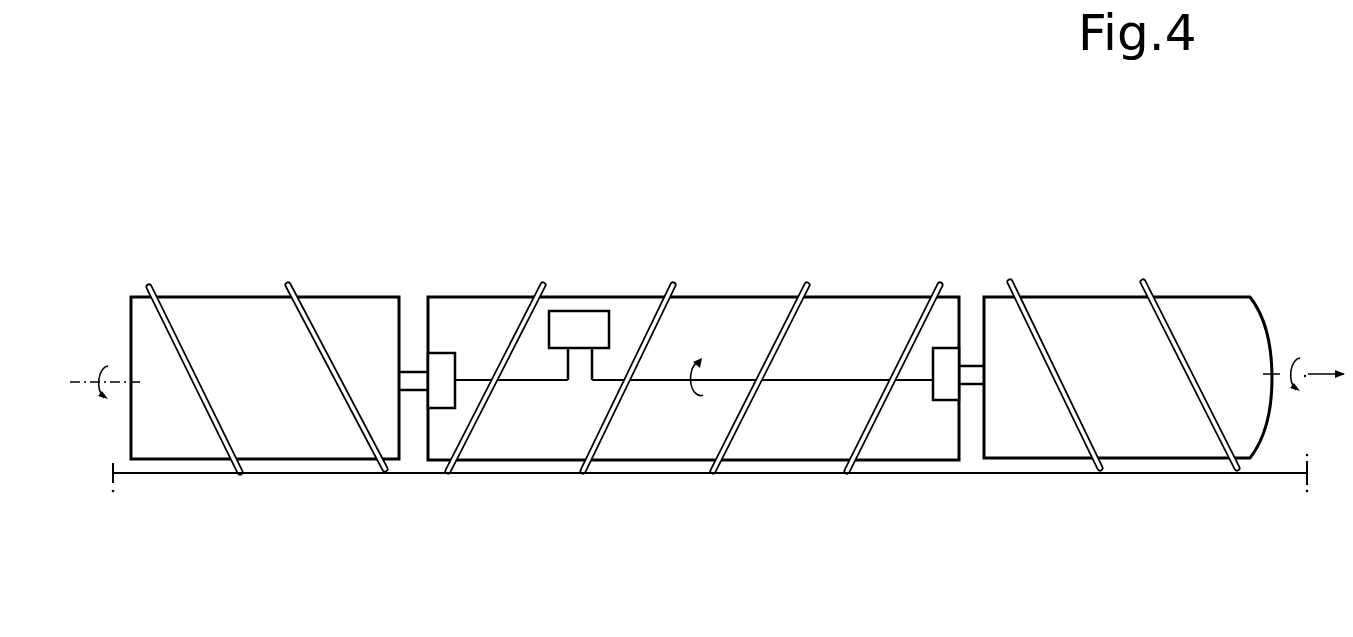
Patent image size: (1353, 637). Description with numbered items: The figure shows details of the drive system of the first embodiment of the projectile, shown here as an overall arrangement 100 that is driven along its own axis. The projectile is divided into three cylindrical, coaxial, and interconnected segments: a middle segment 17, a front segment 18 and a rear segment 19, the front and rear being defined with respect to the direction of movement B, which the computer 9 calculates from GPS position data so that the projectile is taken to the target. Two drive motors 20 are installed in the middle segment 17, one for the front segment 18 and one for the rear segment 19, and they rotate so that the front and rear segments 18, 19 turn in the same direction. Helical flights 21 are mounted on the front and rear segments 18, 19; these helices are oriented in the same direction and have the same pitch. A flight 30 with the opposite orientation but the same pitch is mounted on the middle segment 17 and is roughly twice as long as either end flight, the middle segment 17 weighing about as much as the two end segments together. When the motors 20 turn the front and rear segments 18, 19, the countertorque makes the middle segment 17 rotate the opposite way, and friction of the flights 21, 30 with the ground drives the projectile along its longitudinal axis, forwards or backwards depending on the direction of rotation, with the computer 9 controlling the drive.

The screw conveyor assembly 100 is at (838, 176).
The computer 9 is at (582, 328).
The middle segment 17 is at (722, 290).
The front segment 18 is at (1073, 283).
The rear segment 19 is at (333, 290).
The drive motor 20 is at (448, 358).
The helical flight 21 is at (149, 285).
The flight 30 is at (458, 474).
The direction of movement B is at (1333, 382).